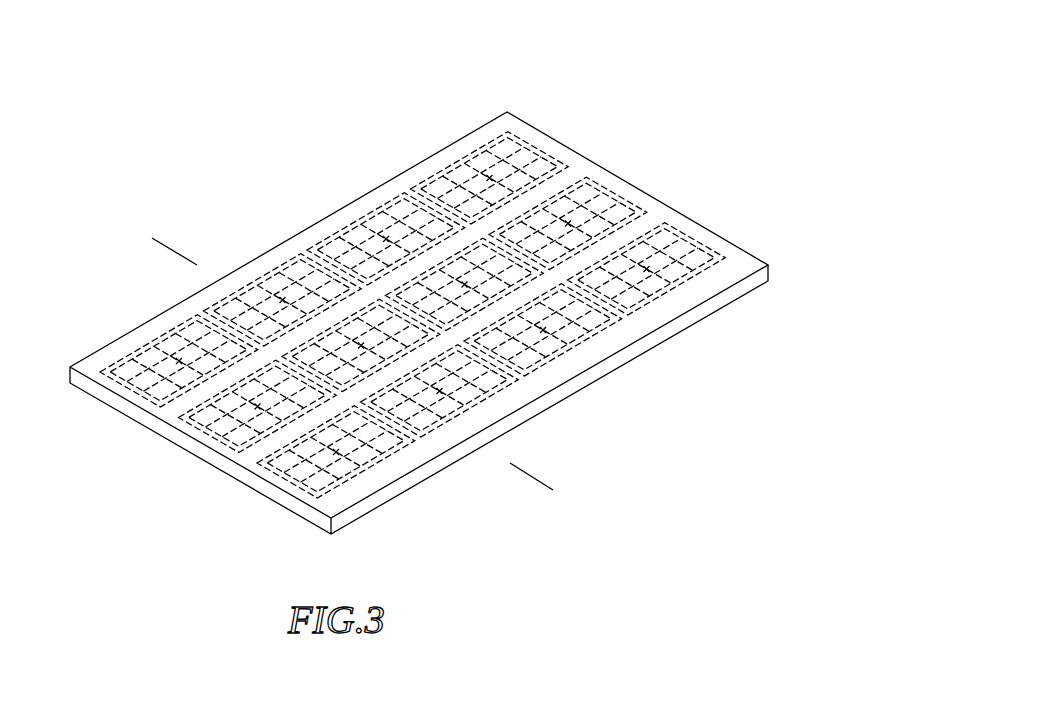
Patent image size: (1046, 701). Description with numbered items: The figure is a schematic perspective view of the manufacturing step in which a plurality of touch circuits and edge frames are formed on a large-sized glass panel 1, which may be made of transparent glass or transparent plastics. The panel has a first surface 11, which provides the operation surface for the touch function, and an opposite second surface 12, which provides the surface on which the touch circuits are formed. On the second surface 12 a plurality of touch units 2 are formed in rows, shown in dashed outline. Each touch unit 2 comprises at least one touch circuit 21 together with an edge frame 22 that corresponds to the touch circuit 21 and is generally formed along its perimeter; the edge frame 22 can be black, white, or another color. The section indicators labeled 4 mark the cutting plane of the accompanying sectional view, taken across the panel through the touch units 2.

The large-sized glass panel 1 is at (454, 278).
The first surface 11 is at (640, 190).
The second surface 12 is at (716, 310).
The touch unit 2 is at (412, 320).
The touch circuit 21 is at (562, 330).
The edge frame 22 is at (613, 322).
The section line 4- 4 is at (168, 255).